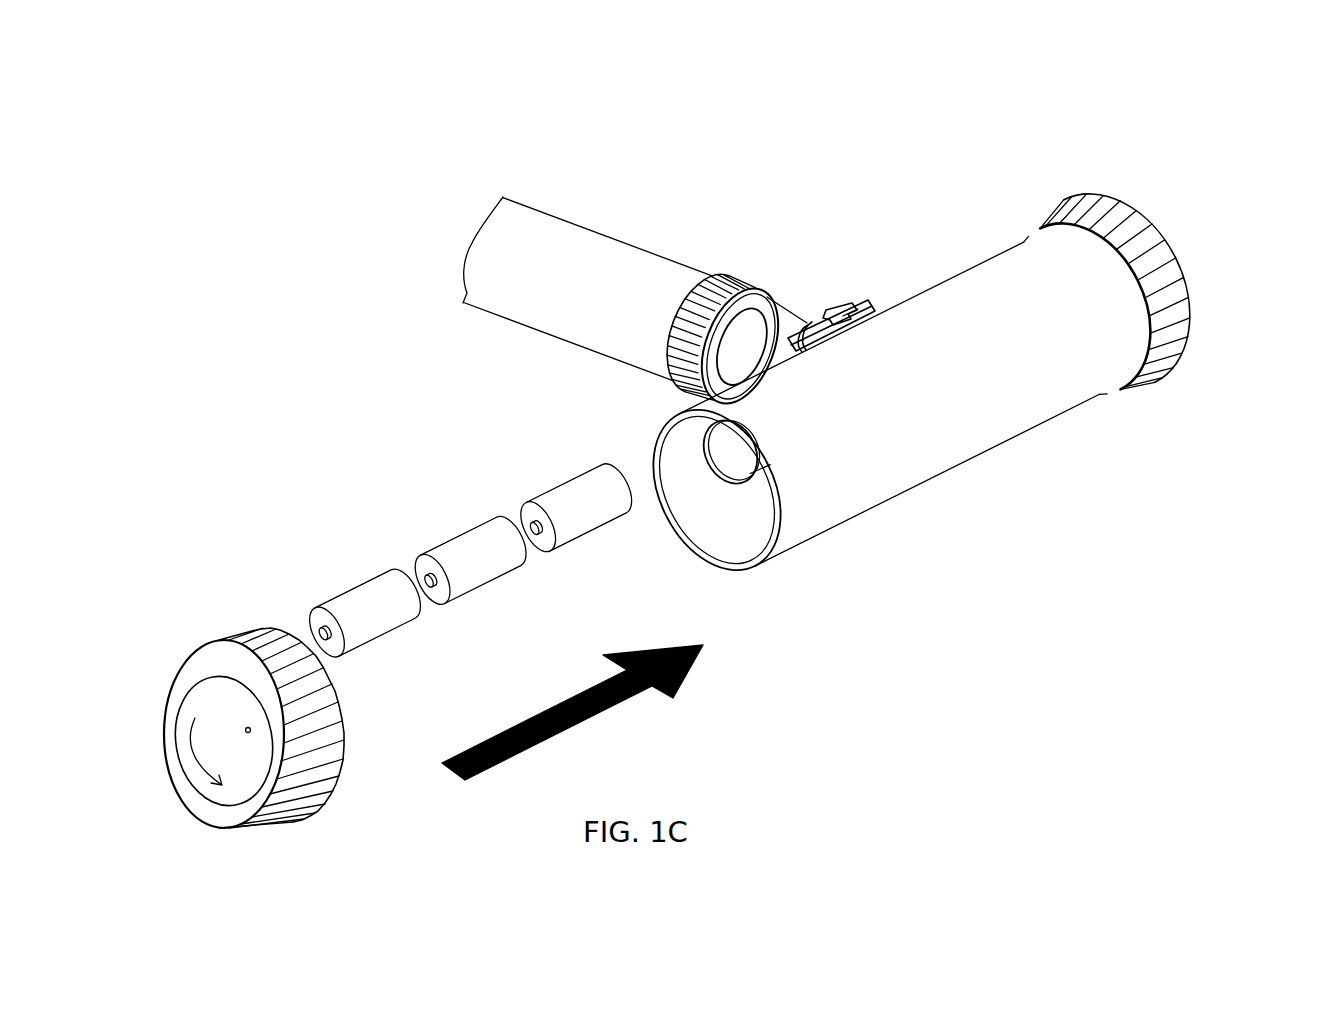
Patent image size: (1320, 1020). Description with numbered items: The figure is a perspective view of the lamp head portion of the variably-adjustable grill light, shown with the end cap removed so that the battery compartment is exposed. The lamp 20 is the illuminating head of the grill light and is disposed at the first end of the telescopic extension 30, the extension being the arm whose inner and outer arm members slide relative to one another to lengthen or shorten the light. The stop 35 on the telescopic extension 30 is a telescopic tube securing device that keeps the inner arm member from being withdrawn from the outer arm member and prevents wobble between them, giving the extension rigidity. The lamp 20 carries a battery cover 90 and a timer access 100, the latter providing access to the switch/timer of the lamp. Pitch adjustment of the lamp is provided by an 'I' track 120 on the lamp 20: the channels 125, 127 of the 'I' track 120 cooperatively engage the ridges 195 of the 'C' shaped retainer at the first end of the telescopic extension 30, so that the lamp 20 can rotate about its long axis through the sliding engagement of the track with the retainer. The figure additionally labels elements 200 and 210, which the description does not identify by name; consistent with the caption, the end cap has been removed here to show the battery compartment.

The lamp 20 is at (975, 402).
The telescopic extension 30 is at (510, 237).
The stop 35 is at (716, 278).
The battery cover 90 is at (260, 645).
The timer access 100 is at (1160, 250).
The 'I' track 120 is at (832, 307).
The channel 125 is at (849, 318).
The channel 127 is at (812, 323).
The ridges 195 is at (792, 352).
The batteries 200 is at (585, 490).
The battery compartment interior 210 is at (726, 454).